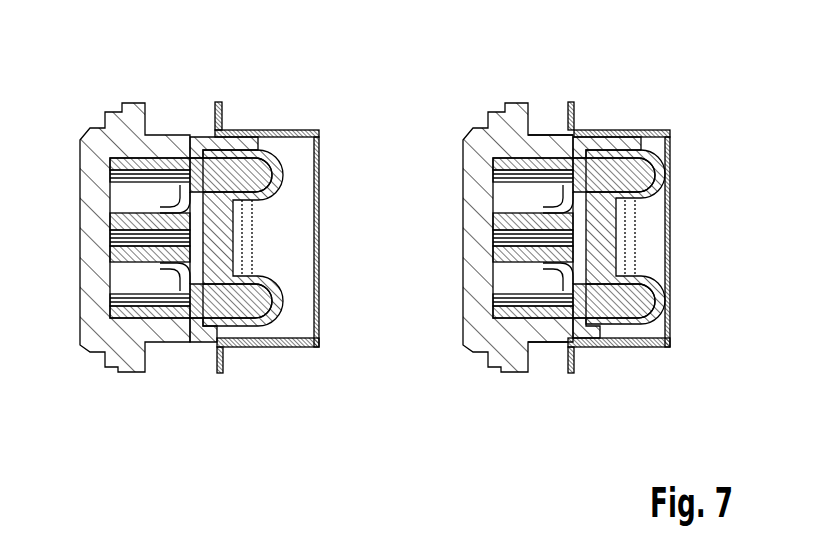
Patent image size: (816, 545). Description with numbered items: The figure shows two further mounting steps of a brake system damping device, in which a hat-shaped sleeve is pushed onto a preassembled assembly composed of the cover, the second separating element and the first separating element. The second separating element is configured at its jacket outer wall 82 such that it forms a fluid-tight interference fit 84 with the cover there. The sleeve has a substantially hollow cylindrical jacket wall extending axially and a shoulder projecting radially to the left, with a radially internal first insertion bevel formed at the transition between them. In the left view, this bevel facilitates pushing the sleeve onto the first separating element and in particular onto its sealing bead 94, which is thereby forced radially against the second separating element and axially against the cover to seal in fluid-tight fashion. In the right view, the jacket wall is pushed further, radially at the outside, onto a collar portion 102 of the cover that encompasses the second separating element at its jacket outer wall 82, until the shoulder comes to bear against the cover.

The jacket outer wall 82 is at (520, 323).
The fluid-tight interference fit 84 is at (550, 323).
The sealing bead 94 is at (587, 147).
The collar portion 102 is at (550, 150).